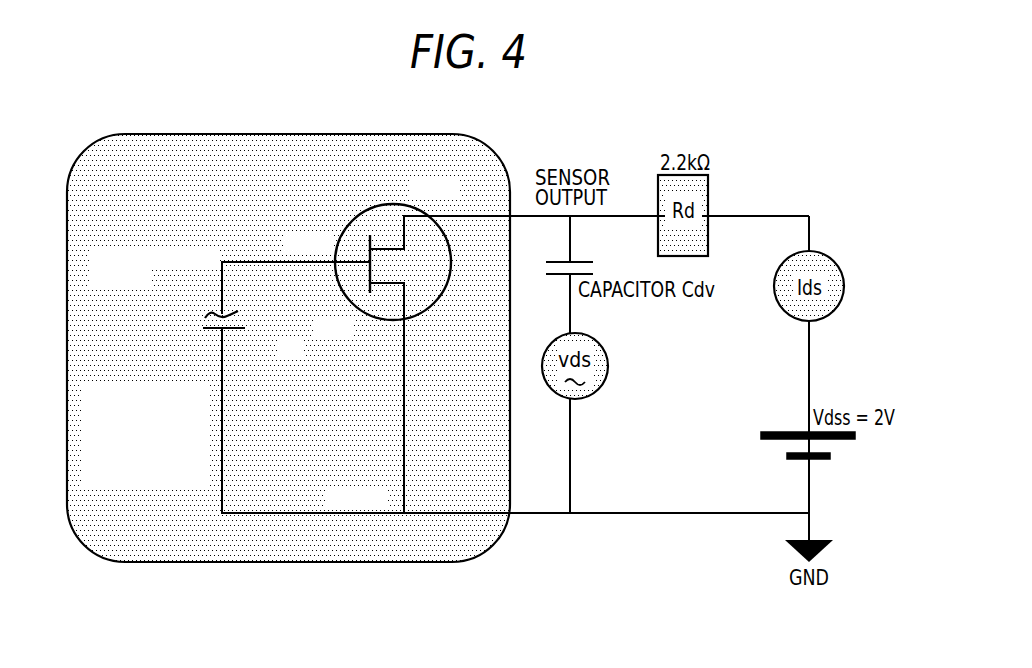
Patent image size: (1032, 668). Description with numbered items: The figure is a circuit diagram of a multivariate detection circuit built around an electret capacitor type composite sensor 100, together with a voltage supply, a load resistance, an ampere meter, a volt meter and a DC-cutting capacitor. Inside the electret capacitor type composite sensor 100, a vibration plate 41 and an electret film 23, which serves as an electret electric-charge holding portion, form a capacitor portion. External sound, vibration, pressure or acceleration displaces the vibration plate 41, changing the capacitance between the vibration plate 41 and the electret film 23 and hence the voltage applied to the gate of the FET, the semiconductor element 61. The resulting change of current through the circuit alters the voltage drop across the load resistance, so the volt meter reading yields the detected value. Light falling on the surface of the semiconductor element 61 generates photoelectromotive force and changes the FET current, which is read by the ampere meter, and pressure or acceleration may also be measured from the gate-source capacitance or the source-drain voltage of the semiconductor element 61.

The electret capacitor type composite sensor 100 is at (312, 385).
The vibration plate 41 is at (204, 307).
The electret film 23 is at (201, 340).
The semiconductor element 61 is at (369, 341).